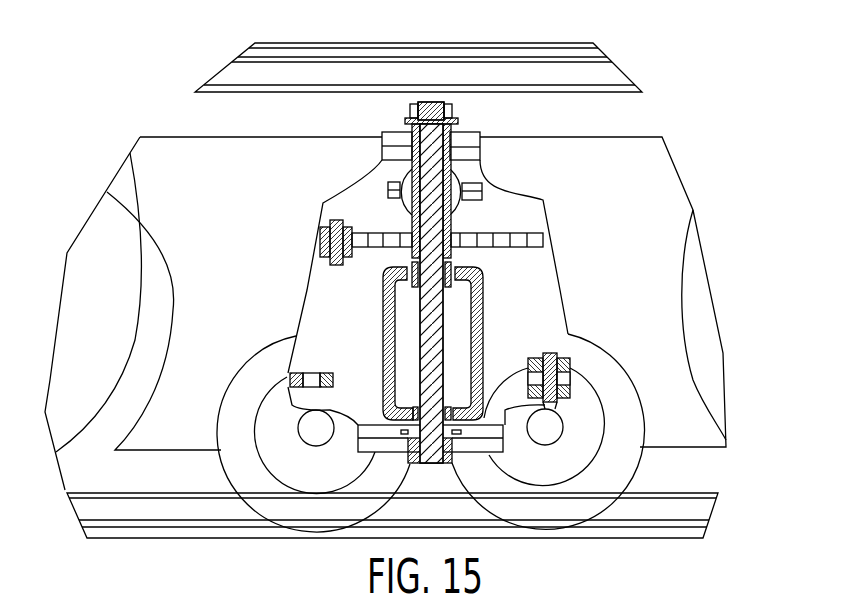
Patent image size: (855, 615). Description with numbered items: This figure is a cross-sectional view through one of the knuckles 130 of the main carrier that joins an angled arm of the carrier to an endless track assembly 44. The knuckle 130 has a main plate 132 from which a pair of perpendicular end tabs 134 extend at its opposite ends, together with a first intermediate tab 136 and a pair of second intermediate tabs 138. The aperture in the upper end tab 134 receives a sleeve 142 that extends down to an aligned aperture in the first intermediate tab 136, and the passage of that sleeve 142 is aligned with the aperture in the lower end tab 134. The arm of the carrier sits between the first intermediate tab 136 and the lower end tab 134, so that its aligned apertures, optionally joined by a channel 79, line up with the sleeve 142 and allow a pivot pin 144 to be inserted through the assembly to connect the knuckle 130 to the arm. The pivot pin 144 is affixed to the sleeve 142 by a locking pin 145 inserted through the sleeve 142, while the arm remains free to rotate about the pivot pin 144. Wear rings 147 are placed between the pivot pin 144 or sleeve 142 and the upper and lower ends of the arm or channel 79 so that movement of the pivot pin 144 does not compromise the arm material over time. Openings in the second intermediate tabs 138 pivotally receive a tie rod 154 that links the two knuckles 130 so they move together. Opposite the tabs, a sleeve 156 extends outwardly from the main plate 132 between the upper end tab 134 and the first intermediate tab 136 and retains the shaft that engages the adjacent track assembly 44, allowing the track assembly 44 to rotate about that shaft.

The endless track assembly 44 is at (670, 106).
The channel 79 is at (455, 308).
The knuckle 130 is at (561, 223).
The main plate 132 is at (305, 300).
The end tab 134 is at (382, 133).
The first intermediate tab 136 is at (545, 240).
The second intermediate tab 138 is at (290, 380).
The sleeve 142 is at (417, 464).
The pivot pin 144 is at (428, 325).
The locking pin 145 is at (458, 122).
The wear ring 147 is at (412, 262).
The tie rod 154 is at (568, 386).
The sleeve 156 is at (412, 176).